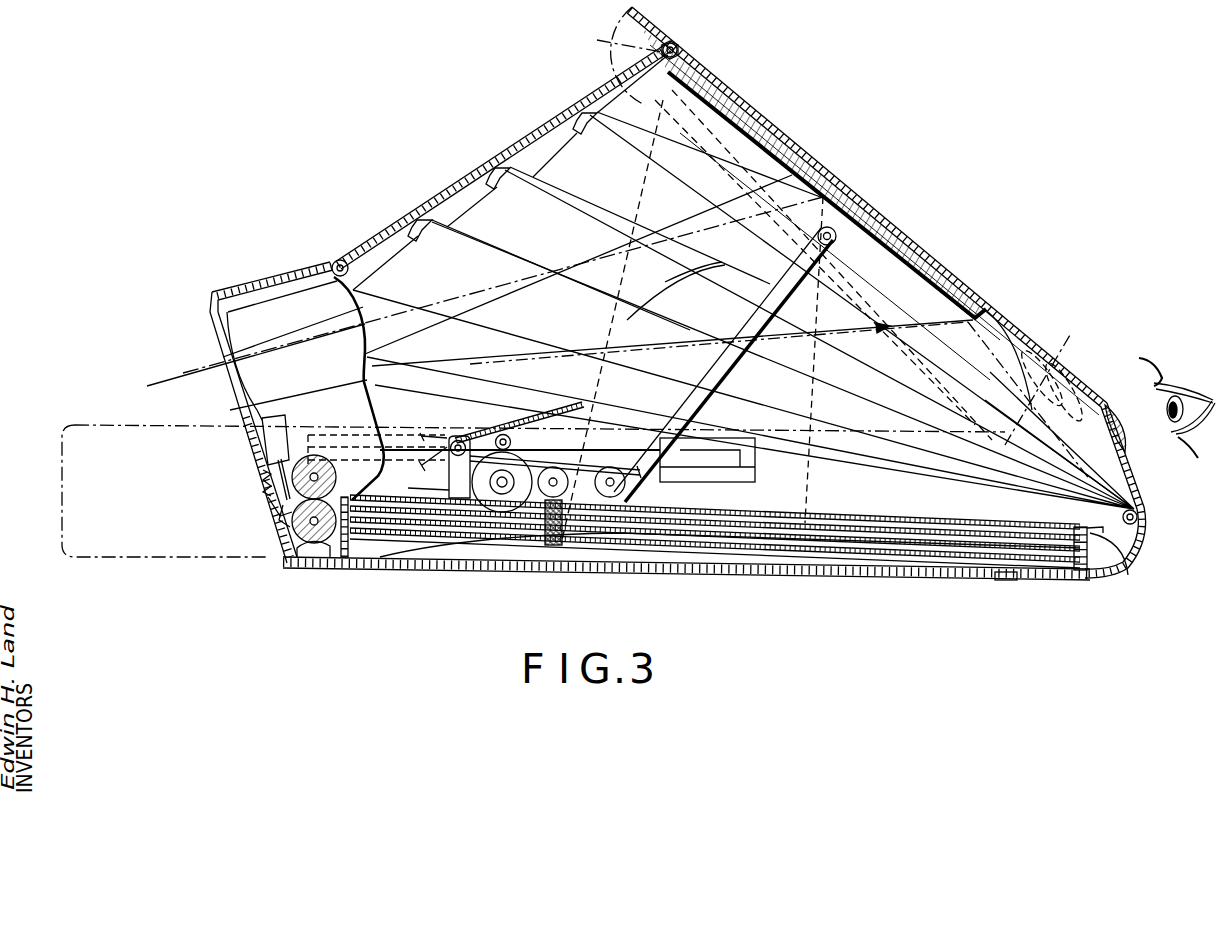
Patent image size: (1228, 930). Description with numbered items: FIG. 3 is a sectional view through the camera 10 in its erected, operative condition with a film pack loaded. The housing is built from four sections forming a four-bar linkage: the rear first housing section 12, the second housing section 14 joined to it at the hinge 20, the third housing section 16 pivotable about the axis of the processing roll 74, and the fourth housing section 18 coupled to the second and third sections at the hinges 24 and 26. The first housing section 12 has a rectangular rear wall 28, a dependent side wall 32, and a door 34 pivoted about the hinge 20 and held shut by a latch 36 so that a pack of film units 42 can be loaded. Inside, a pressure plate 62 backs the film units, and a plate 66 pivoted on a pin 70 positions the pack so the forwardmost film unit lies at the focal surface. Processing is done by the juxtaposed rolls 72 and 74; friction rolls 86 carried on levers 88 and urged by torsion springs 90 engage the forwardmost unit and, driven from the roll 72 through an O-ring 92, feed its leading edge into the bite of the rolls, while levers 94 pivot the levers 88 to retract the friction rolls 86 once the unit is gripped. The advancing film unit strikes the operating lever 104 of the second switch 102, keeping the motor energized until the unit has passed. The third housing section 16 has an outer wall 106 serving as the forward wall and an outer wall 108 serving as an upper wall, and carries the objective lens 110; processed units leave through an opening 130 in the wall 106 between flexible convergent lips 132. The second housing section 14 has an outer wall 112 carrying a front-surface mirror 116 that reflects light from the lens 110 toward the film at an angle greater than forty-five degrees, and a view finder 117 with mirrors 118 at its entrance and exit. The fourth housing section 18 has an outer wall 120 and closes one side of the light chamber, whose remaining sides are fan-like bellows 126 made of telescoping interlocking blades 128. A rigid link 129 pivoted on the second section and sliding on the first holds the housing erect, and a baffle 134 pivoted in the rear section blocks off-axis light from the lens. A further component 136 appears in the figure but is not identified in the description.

The camera 10 is at (792, 114).
The first housing section 12 is at (668, 582).
The second housing section 14 is at (942, 253).
The third housing section 16 is at (222, 396).
The fourth housing section 18 is at (428, 178).
The hinge 20 is at (1139, 514).
The hinge 24 is at (677, 48).
The hinge 26 is at (338, 260).
The rear wall 28 is at (812, 572).
The side wall 32 is at (915, 560).
The door 34 is at (1082, 580).
The latch 36 is at (1008, 582).
The film units 42 is at (878, 518).
The pressure plate 62 is at (362, 560).
The plate 66 is at (833, 510).
The pin 70 is at (458, 438).
The roll 72 is at (312, 454).
The roll 74 is at (314, 545).
The friction rolls 86 is at (411, 482).
The lever 88 is at (700, 466).
The torsion springs 90 is at (616, 440).
The O-ring 92 is at (395, 460).
The levers 94 is at (388, 440).
The second switch 102 is at (276, 462).
The operating lever 104 is at (262, 486).
The outer wall 106 is at (260, 440).
The outer wall 108 is at (264, 280).
The objective lens 110 is at (232, 330).
The outer wall 112 is at (976, 284).
The mirror 116 is at (902, 246).
The view finder 117 is at (1040, 340).
The mirrors 118 is at (610, 42).
The outer wall 120 is at (522, 148).
The bellows 126 is at (688, 164).
The blades 128 is at (692, 276).
The link 129 is at (700, 352).
The opening 130 is at (268, 500).
The lips 132 is at (266, 516).
The baffle 134 is at (550, 405).
The pivot 136 is at (480, 434).